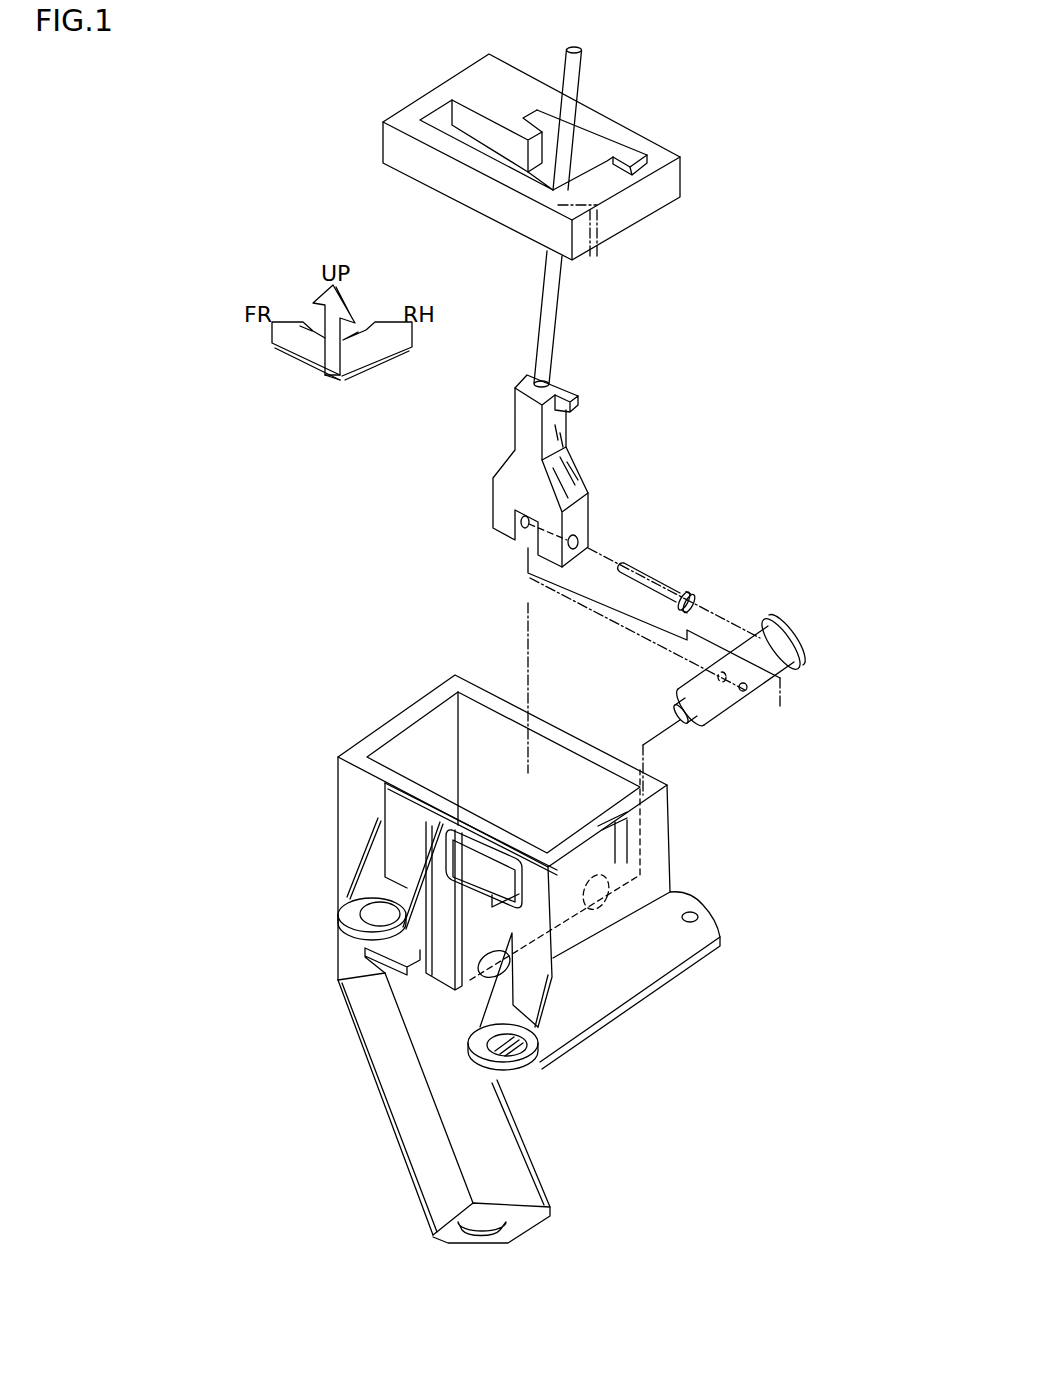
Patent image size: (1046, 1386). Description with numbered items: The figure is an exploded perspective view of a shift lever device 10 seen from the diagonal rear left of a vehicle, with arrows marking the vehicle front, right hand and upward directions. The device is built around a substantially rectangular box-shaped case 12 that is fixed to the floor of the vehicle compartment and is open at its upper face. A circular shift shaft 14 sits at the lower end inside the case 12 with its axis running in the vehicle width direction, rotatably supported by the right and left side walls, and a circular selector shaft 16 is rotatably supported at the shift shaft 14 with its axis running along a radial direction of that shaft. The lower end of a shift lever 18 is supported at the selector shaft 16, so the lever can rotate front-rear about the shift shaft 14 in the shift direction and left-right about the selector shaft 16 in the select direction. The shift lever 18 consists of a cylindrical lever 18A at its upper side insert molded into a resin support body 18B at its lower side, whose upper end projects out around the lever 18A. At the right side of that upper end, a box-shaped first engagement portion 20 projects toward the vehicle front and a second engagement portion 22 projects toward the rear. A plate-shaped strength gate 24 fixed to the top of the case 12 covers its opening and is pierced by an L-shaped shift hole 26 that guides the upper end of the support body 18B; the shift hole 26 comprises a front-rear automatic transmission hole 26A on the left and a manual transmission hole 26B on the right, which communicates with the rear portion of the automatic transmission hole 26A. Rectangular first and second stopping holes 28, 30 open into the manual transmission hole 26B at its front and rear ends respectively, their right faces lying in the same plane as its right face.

The shift lever device 10 is at (253, 128).
The case 12 is at (397, 715).
The shift shaft 14 is at (788, 613).
The selector shaft 16 is at (663, 580).
The shift lever 18 is at (512, 388).
The lever 18A is at (558, 317).
The support body 18B is at (578, 469).
The first engagement portion 20 is at (519, 375).
The second engagement portion 22 is at (580, 396).
The strength gate 24 is at (423, 90).
The shift hole 26 is at (482, 133).
The automatic transmission hole 26A is at (478, 149).
The manual transmission hole 26B is at (588, 148).
The first stopping hole 28 is at (537, 112).
The second stopping hole 30 is at (622, 157).